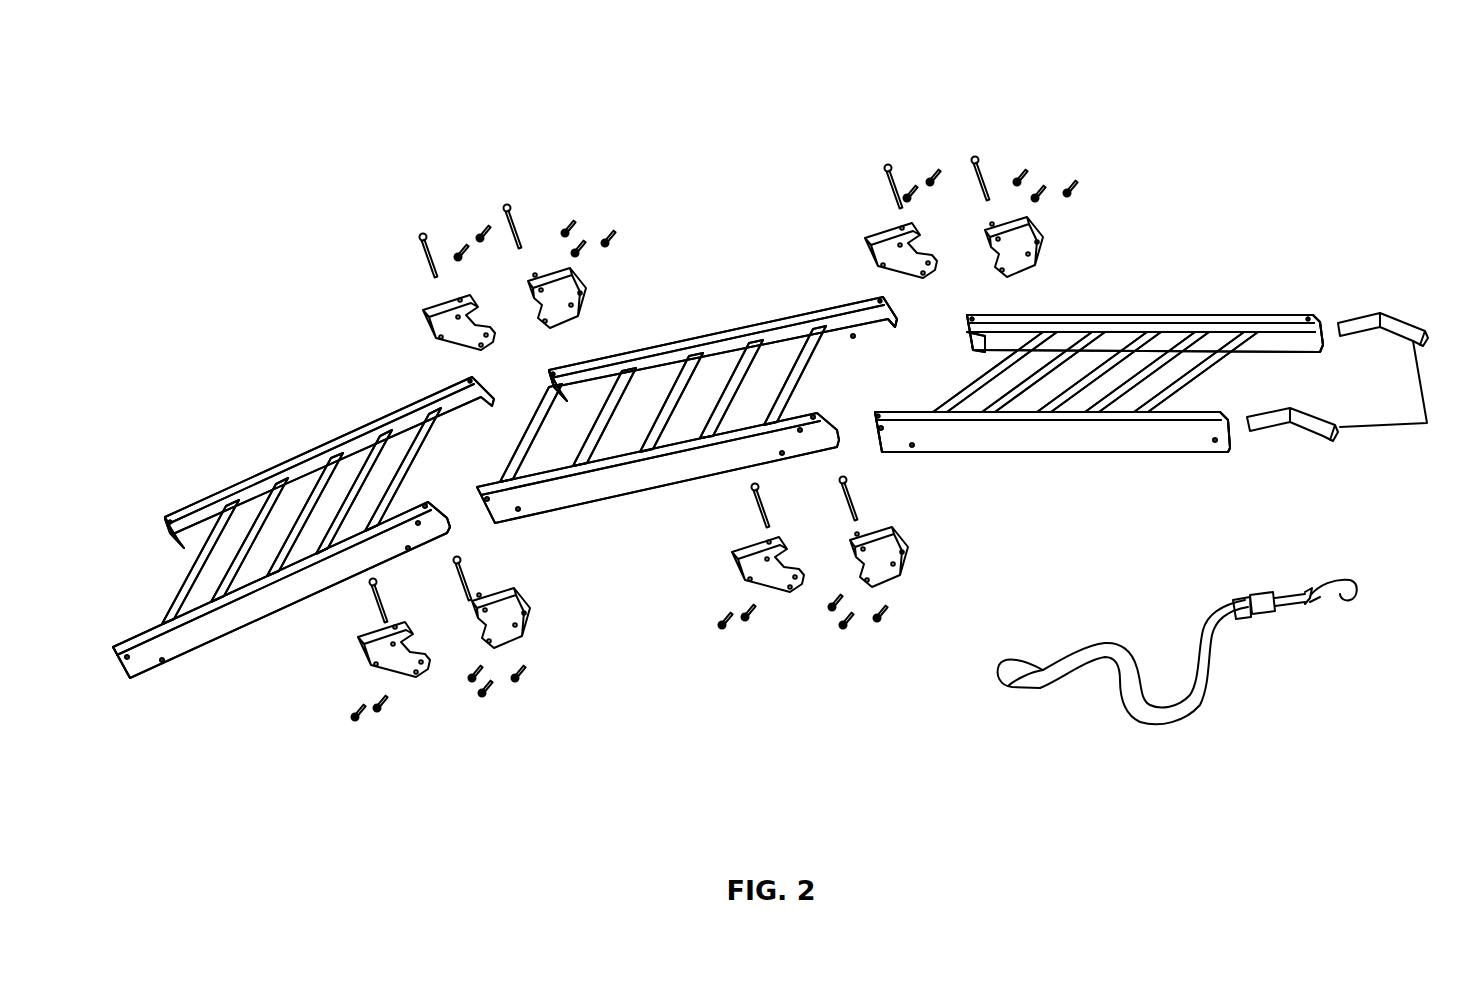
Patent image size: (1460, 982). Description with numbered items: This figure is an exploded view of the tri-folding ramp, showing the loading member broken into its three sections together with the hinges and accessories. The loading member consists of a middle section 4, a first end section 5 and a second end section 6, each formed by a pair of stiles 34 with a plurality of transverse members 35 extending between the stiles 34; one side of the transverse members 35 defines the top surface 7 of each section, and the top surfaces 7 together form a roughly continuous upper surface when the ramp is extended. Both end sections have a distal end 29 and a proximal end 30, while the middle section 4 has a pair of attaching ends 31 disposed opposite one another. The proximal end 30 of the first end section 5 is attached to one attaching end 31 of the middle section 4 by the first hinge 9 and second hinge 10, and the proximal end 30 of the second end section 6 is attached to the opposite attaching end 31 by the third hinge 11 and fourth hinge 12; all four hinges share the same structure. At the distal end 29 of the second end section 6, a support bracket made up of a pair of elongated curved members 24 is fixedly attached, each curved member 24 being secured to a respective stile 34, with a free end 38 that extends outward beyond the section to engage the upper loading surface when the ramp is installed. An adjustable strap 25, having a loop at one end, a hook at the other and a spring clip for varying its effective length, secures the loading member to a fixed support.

The middle section 4 is at (735, 470).
The first end section 5 is at (245, 625).
The second end section 6 is at (1130, 452).
The top surface 7 is at (303, 515).
The first hinge 9 is at (510, 732).
The second hinge 10 is at (637, 158).
The third hinge 11 is at (868, 694).
The fourth hinge 12 is at (933, 110).
The elongated curved members 24 is at (1368, 314).
The adjustable strap 25 is at (1220, 623).
The distal end 29 is at (127, 640).
The proximal end 30 is at (452, 505).
The attaching ends 31 is at (868, 299).
The stiles 34 is at (178, 508).
The transverse members 35 is at (270, 505).
The free end 38 is at (1399, 402).